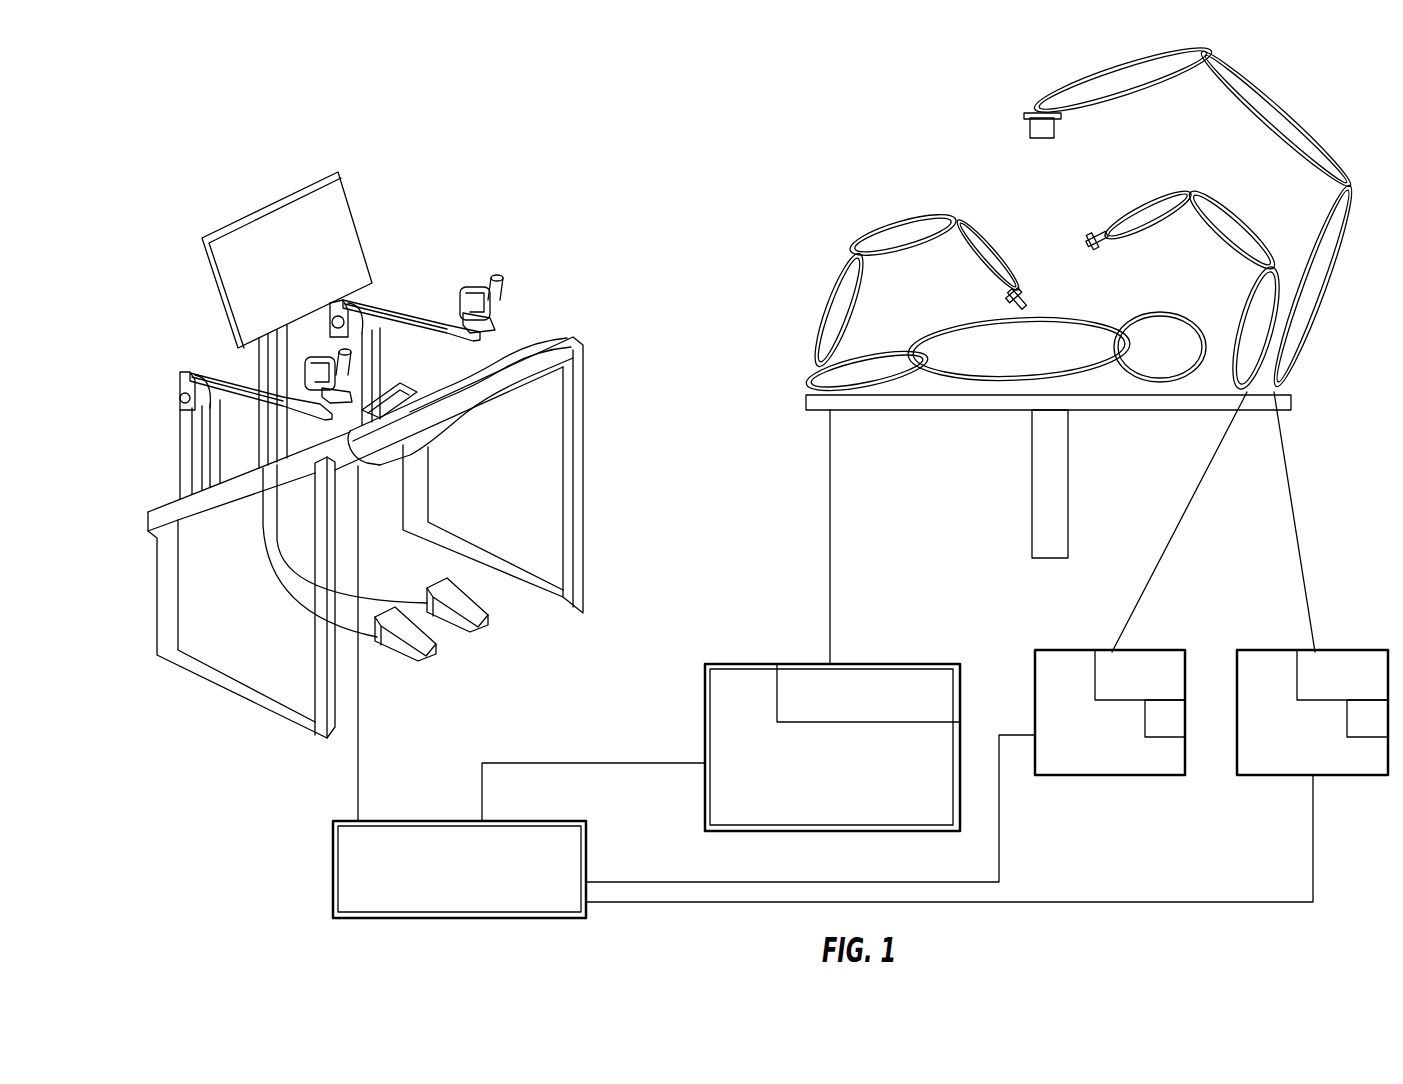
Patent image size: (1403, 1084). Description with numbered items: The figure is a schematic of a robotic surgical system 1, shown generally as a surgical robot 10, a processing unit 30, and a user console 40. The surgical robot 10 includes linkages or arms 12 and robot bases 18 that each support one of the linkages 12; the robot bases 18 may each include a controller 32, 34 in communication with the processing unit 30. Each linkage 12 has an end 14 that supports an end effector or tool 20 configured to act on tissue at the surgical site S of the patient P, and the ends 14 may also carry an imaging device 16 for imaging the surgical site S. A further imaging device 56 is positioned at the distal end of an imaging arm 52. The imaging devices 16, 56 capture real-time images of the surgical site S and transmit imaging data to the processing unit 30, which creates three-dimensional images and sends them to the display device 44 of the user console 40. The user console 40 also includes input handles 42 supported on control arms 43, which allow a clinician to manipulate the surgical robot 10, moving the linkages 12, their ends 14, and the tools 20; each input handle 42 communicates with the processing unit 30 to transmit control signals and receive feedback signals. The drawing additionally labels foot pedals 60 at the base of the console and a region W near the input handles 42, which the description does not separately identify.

The robotic surgical system 1 is at (579, 121).
The surgical robot 10 is at (913, 103).
The linkages 12 is at (863, 200).
The end 14 is at (990, 299).
The imaging device 16 is at (1017, 286).
The robot base 18 is at (842, 774).
The end effector or tool 20 is at (1032, 289).
The processing unit 30 is at (470, 884).
The controller 32 is at (1377, 736).
The controller 34 is at (1175, 736).
The user console 40 is at (213, 165).
The input handle 42 is at (497, 290).
The control arm 43 is at (397, 303).
The display device 44 is at (353, 188).
The imaging arm 52 is at (1303, 127).
The imaging device 56 is at (1024, 130).
The foot pedal 60 is at (470, 607).
The clinician workspace W is at (498, 250).
The surgical site S is at (1065, 326).
The patient P is at (1065, 360).